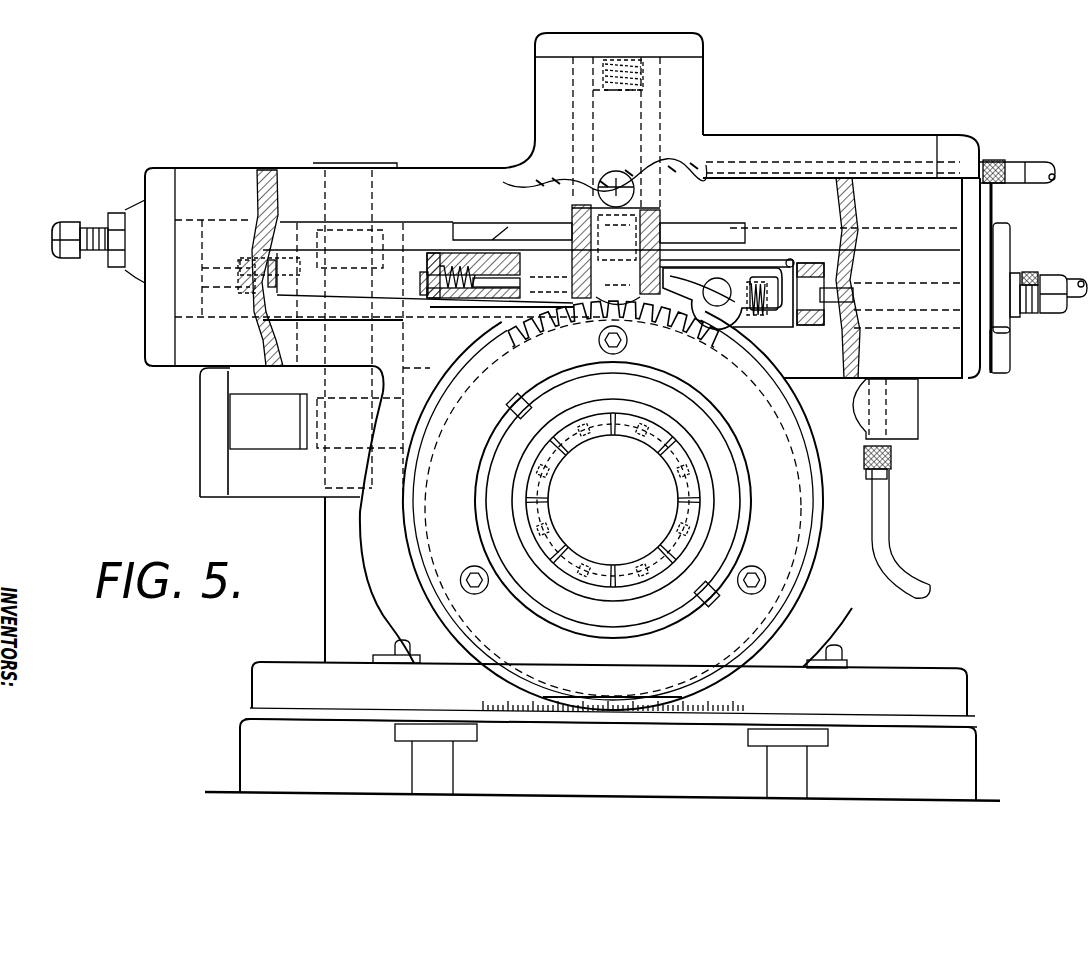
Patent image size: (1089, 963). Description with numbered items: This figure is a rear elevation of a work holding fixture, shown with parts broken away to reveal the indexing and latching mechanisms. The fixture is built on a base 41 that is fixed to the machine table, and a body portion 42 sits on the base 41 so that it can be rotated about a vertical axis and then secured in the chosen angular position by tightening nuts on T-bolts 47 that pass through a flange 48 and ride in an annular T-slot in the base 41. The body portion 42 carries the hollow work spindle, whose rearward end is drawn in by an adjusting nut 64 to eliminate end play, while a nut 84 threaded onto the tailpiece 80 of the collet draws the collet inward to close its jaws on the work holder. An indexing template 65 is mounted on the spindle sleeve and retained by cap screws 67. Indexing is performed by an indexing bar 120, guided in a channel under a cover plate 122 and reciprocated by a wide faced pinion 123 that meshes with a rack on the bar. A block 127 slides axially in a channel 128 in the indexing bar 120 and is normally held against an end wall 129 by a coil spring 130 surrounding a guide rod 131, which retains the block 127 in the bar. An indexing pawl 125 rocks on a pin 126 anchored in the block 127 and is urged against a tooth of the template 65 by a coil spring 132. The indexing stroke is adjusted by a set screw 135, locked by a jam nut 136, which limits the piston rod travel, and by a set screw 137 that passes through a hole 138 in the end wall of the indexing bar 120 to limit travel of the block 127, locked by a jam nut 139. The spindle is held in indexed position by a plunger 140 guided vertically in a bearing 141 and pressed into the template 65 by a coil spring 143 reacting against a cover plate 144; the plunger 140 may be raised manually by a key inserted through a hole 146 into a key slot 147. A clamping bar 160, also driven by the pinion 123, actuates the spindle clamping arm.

The base 41 is at (976, 752).
The body portion 42 is at (326, 594).
The T-bolts 47 is at (830, 650).
The flange 48 is at (250, 676).
The adjusting nut 64 is at (706, 408).
The indexing template 65 is at (568, 322).
The cap screws 67 is at (627, 341).
The tailpiece 80 is at (690, 452).
The nut 84 is at (735, 476).
The indexing bar 120 is at (451, 222).
The cover plate 122 is at (205, 178).
The wide faced pinion 123 is at (398, 362).
The indexing pawl 125 is at (690, 326).
The pin 126 is at (722, 290).
The block 127 is at (712, 268).
The channel 128 is at (405, 260).
The end wall 129 is at (791, 259).
The coil spring 130 is at (256, 262).
The guide rod 131 is at (520, 279).
The coil spring 132 is at (752, 290).
The set screw 135 is at (100, 232).
The jam nut 136 is at (113, 263).
The set screw 137 is at (1033, 314).
The hole 138 is at (826, 278).
The jam nut 139 is at (1011, 277).
The plunger 140 is at (660, 240).
The bearing 141 is at (572, 222).
The coil spring 143 is at (643, 70).
The cover plate 144 is at (703, 52).
The hole 146 is at (610, 180).
The key slot 147 is at (624, 192).
The clamping bar 160 is at (280, 432).